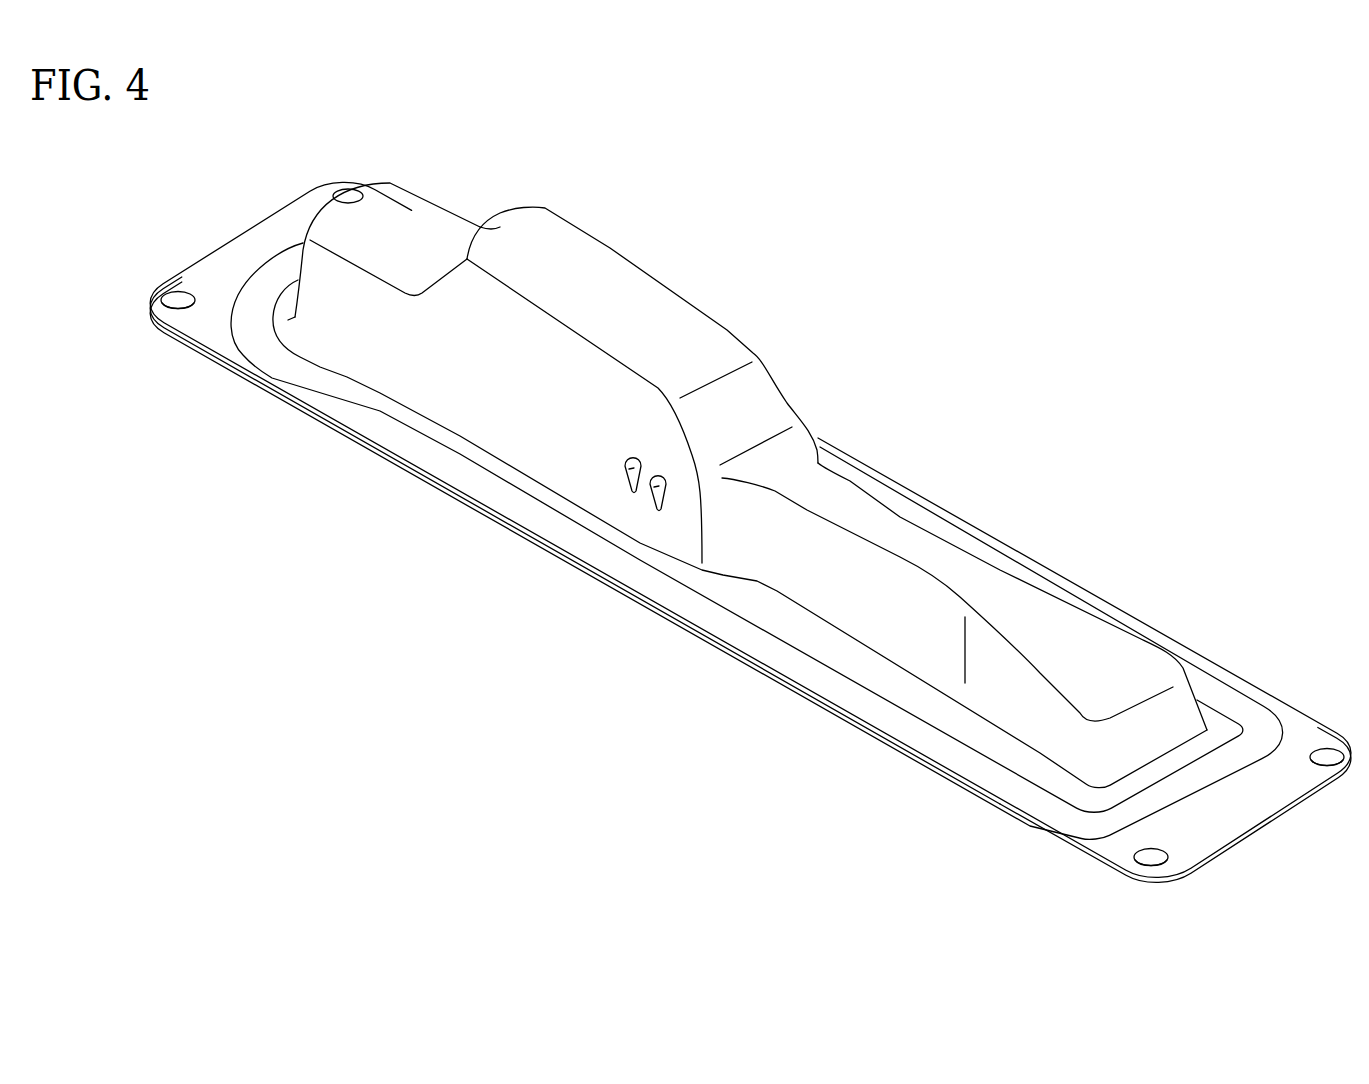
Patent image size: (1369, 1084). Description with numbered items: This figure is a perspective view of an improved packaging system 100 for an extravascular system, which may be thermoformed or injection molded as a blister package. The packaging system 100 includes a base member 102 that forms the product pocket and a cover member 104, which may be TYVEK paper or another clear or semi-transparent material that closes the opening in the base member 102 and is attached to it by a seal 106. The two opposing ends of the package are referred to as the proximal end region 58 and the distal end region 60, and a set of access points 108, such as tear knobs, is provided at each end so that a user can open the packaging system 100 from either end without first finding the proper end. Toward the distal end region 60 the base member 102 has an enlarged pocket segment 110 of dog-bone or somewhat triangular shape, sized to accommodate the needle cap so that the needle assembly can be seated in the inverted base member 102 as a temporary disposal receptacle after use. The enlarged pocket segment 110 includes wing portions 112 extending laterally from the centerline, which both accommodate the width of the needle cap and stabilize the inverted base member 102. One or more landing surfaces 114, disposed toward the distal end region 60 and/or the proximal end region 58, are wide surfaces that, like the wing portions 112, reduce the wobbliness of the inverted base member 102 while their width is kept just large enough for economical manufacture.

The proximal end region 58 is at (160, 323).
The distal end region 60 is at (1078, 849).
The packaging system 100 is at (359, 671).
The base member 102 is at (878, 522).
The cover member 104 is at (815, 698).
The seal 106 is at (743, 634).
The access points 108 is at (340, 190).
The enlarged pocket segment 110 is at (1025, 707).
The wing portions 112 is at (1180, 672).
The landing surfaces 114 is at (647, 313).